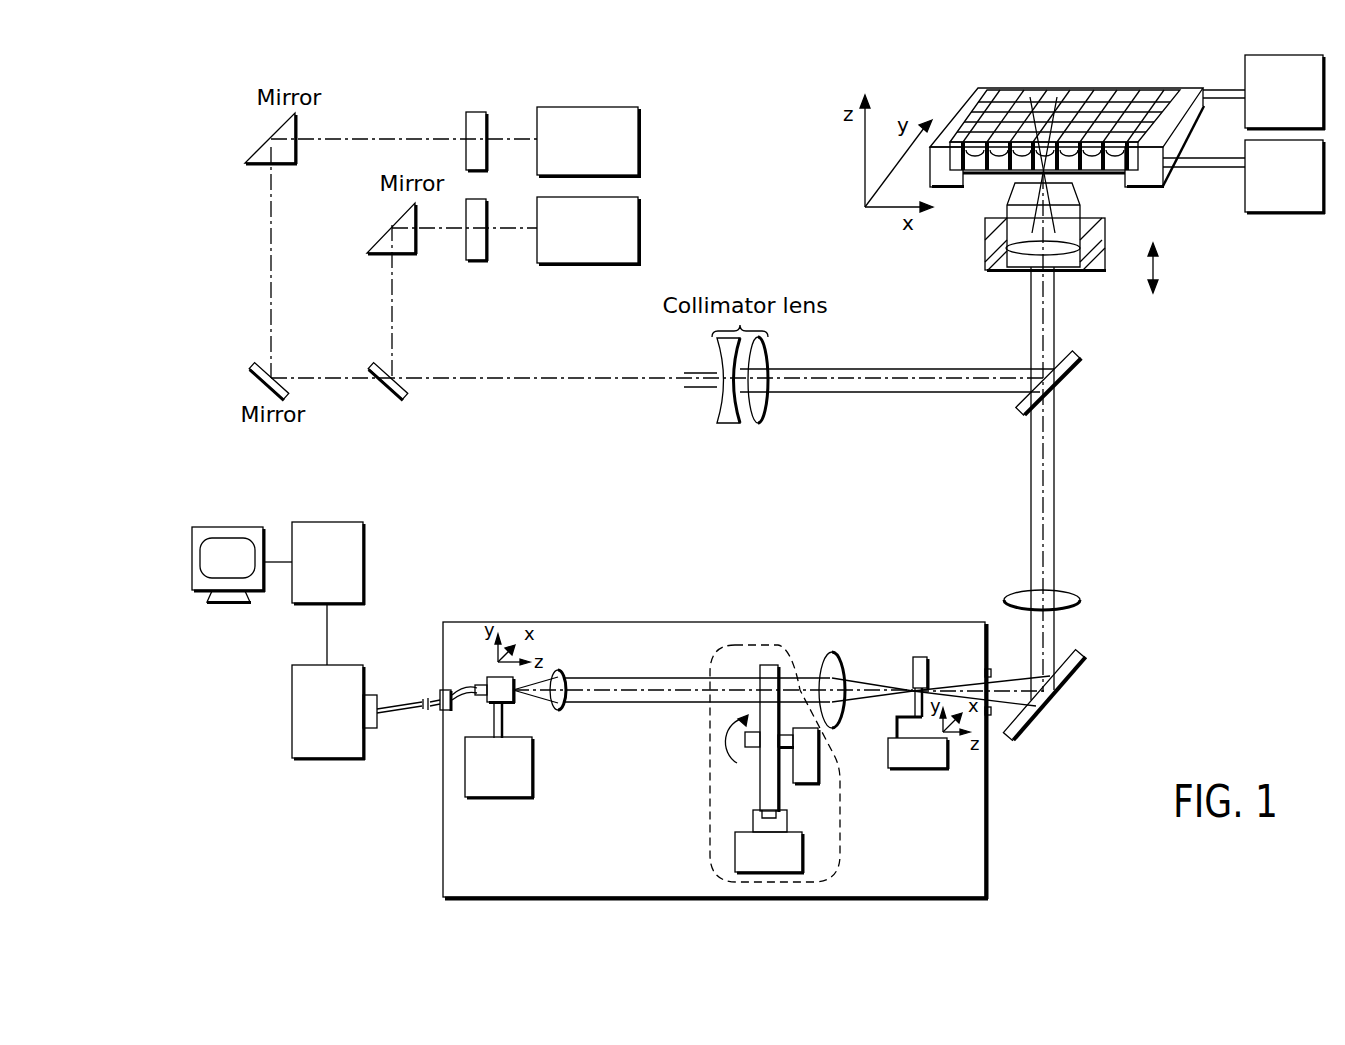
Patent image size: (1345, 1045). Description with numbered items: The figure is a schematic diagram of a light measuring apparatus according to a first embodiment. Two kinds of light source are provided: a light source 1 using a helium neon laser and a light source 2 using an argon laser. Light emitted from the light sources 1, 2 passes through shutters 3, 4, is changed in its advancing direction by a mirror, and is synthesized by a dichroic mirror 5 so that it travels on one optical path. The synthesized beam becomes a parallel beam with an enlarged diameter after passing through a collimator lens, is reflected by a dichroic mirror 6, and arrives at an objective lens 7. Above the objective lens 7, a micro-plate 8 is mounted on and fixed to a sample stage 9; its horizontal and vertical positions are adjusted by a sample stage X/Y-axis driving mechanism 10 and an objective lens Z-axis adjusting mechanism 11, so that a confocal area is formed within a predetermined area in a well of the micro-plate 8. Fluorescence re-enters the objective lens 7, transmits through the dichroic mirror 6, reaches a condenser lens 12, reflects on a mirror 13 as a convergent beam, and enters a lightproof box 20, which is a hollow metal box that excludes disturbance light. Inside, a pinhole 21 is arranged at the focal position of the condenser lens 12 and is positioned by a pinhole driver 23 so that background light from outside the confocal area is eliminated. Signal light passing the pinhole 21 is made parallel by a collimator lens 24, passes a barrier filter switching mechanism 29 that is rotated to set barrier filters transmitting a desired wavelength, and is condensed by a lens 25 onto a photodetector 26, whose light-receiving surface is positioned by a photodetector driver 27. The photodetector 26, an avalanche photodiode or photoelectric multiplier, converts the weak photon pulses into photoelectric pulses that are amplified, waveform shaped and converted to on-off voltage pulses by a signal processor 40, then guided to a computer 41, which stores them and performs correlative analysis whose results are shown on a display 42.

The light source 1 is at (640, 140).
The light source 2 is at (640, 230).
The shutter 3 is at (478, 112).
The shutter 4 is at (478, 199).
The dichroic mirror 5 is at (404, 396).
The dichroic mirror 6 is at (1080, 358).
The objective lens 7 is at (1067, 250).
The micro-plate 8 is at (991, 96).
The sample stage 9 is at (970, 103).
The sample stage X/Y-axis driving mechanism 10 is at (1275, 212).
The objective lens Z-axis adjusting mechanism 11 is at (985, 258).
The condenser lens 12 is at (1072, 593).
The mirror 13 is at (1083, 650).
The lightproof box 20 is at (715, 622).
The pinhole 21 is at (919, 655).
The pinhole driver 23 is at (917, 768).
The collimator lens 24 is at (834, 652).
The lens 25 is at (565, 672).
The photodetector 26 is at (486, 680).
The photodetector driver 27 is at (505, 797).
The barrier filter switching mechanism 29 is at (769, 645).
The signal processor 40 is at (325, 750).
The computer 41 is at (367, 540).
The display 42 is at (230, 525).